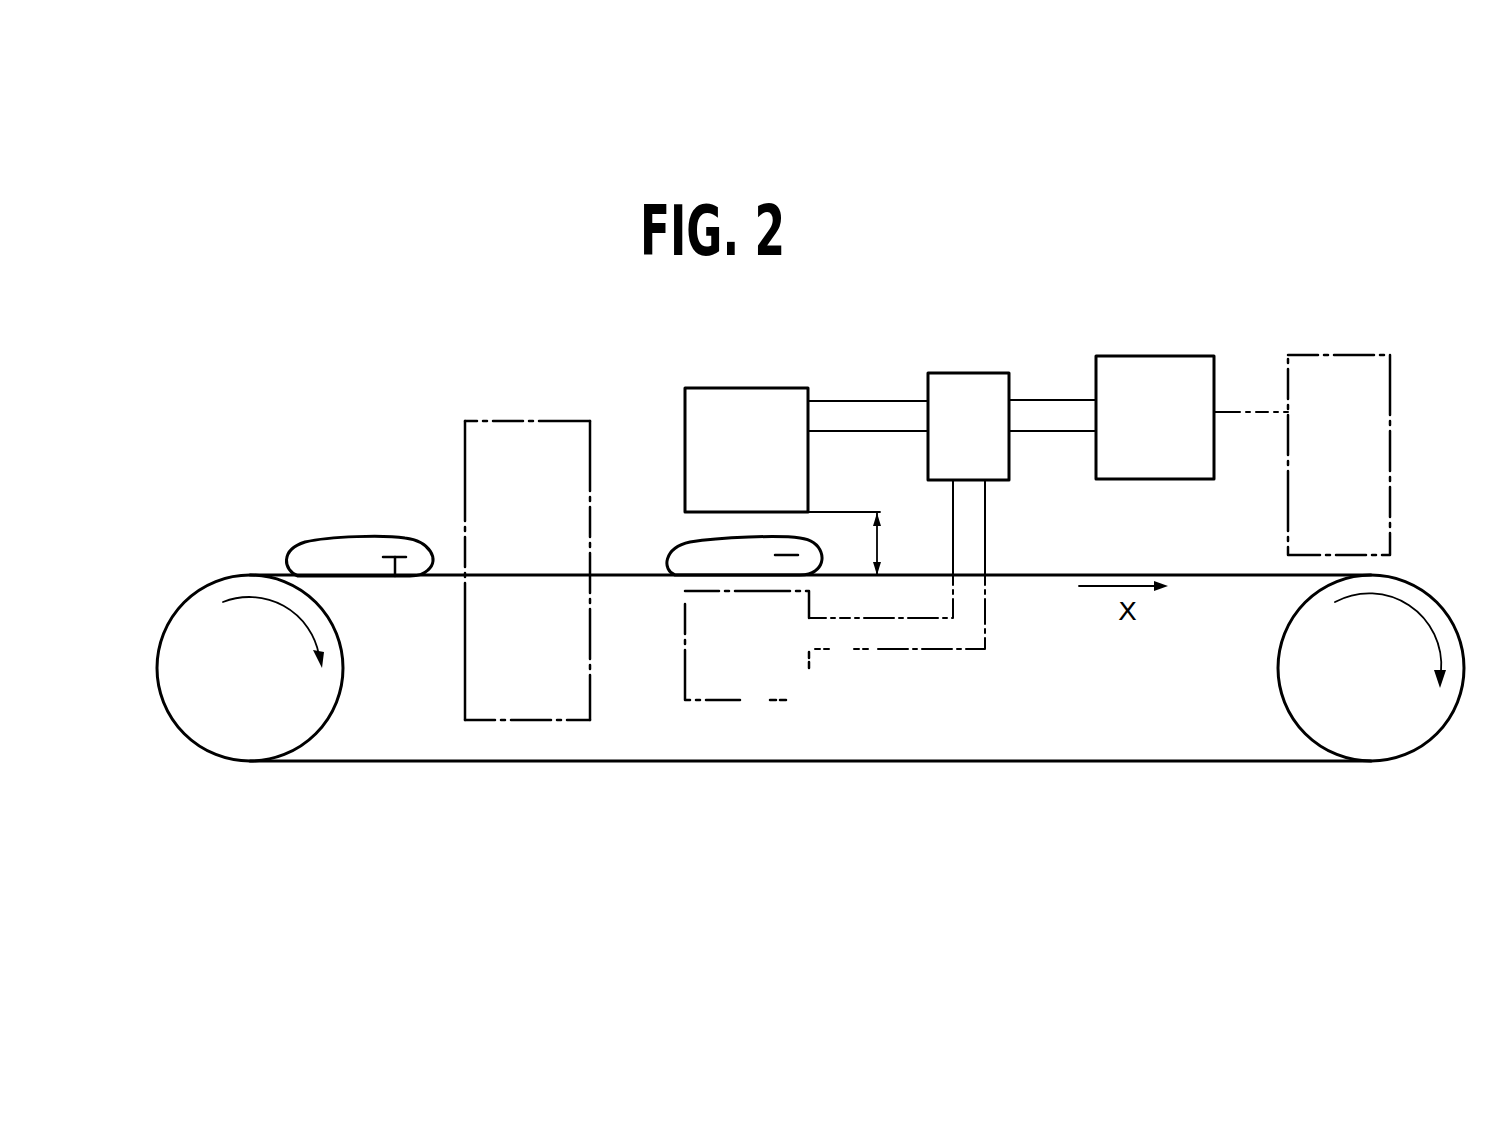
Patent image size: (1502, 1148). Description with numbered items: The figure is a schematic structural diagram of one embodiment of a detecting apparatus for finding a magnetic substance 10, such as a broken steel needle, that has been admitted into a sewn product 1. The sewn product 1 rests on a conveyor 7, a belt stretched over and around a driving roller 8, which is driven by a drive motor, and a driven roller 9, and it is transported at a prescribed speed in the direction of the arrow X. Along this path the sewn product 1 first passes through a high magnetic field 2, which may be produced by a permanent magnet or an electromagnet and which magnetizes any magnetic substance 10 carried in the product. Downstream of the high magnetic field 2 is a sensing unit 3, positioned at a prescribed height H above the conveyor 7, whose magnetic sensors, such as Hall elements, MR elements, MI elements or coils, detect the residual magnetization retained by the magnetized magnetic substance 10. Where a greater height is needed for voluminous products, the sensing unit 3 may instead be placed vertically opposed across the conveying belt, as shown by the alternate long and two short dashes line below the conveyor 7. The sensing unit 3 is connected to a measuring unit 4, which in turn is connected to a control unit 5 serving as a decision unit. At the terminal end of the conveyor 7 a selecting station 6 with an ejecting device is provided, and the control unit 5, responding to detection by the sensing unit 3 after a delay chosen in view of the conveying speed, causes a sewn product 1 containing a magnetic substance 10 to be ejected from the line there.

The sewn product 1 is at (364, 537).
The high magnetic field 2 is at (493, 421).
The sensing unit 3 is at (724, 388).
The measuring unit 4 is at (953, 373).
The control unit 5 is at (1140, 356).
The selecting station 6 is at (1318, 355).
The conveyor 7 is at (1062, 762).
The driving roller 8 is at (1292, 675).
The driven roller 9 is at (325, 702).
The magnetic substance 10 is at (395, 576).